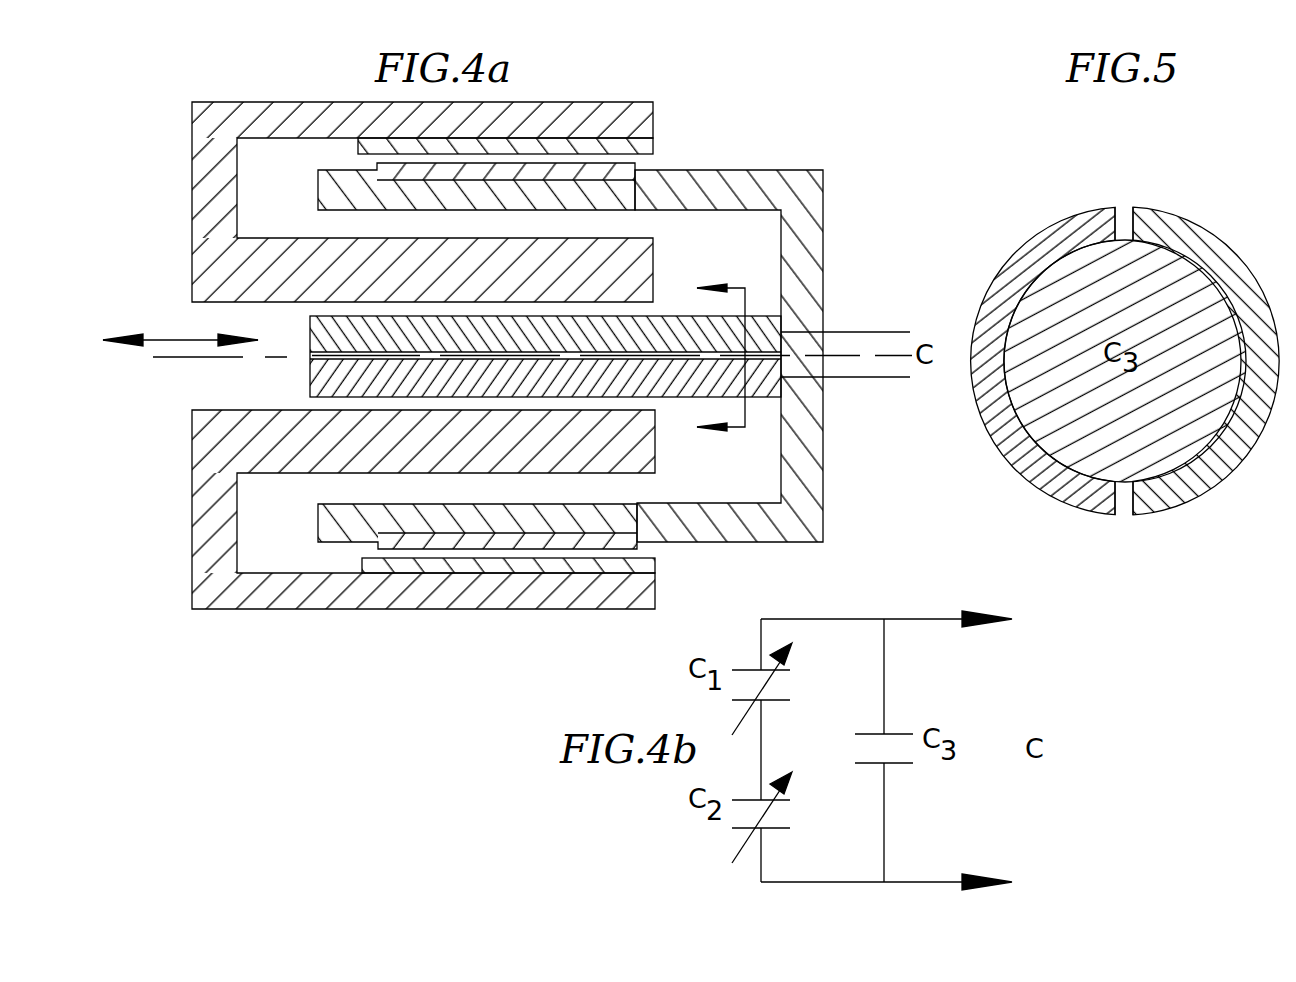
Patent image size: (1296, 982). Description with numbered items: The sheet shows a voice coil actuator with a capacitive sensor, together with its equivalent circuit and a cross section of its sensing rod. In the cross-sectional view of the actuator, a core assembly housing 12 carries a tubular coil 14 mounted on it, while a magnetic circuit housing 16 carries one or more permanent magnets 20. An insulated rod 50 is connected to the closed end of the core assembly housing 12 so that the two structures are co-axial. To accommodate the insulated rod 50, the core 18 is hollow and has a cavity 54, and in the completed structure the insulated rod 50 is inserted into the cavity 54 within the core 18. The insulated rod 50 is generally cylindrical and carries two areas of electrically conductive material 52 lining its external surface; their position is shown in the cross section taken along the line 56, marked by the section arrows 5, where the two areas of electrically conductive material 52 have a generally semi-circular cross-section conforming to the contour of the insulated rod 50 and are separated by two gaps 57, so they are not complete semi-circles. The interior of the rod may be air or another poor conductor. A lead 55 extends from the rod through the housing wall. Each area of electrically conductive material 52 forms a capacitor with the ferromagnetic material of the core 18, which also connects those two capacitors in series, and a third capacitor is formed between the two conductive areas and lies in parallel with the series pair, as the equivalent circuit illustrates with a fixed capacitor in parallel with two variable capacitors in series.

In FIG. 4a, the core assembly housing 12 is at (750, 170).
In FIG. 4a, the tubular coil 14 is at (382, 178).
In FIG. 4a, the magnetic circuit housing 16 is at (600, 102).
In FIG. 4a, the core 18 is at (305, 272).
In FIG. 4a, the permanent magnet 20 is at (530, 573).
In FIG. 4a, the insulated rod 50 is at (672, 398).
In FIG. 5, the insulated rod 50 is at (1160, 210).
In FIG. 4a, the area of electrically conductive material 52 is at (672, 316).
In FIG. 5, the area of electrically conductive material 52 is at (1037, 467).
In FIG. 4a, the cavity 54 is at (222, 390).
In FIG. 4a, the lead wire 55 is at (850, 332).
In FIG. 4a, the line 56 is at (745, 286).
In FIG. 5, the gap 57 is at (1117, 207).
In FIG. 4a, the section line 5 is at (721, 360).